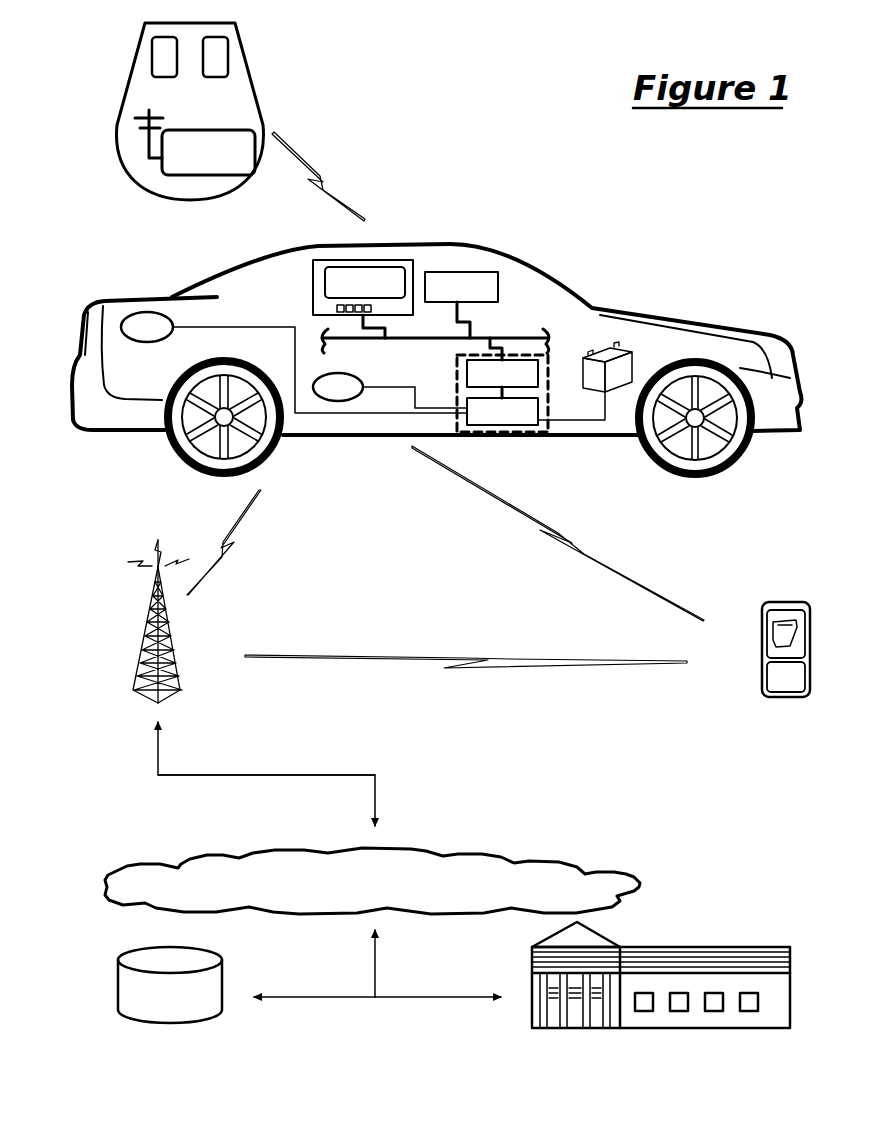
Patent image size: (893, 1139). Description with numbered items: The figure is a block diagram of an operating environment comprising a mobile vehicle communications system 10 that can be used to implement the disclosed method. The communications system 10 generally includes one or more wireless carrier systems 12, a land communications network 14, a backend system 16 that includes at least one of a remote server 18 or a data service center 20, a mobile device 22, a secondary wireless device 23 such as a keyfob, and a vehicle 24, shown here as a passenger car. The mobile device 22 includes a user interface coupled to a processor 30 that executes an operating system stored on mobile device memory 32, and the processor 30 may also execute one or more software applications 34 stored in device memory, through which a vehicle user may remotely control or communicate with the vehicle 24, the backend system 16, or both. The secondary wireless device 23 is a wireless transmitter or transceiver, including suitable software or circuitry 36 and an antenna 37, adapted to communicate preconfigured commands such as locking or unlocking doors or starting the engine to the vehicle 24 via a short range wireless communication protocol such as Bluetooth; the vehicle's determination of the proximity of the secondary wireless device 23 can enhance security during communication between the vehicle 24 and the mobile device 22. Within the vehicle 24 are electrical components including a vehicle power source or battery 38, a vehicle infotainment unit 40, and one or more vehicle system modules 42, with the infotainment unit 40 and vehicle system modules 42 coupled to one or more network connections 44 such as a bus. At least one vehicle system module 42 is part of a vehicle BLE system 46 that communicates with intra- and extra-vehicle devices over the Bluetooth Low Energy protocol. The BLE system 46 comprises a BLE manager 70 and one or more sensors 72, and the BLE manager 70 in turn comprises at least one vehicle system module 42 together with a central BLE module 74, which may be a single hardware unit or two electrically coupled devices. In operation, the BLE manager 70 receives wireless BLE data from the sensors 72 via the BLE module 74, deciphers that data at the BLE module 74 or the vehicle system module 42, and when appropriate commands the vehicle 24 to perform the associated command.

The mobile vehicle communications system 10 is at (436, 317).
The wireless carrier system 12 is at (147, 633).
The land communications network 14 is at (372, 881).
The backend system 16 is at (500, 1022).
The remote server 18 is at (157, 960).
The data service center 20 is at (532, 968).
The mobile device 22 is at (762, 644).
The secondary wireless device 23 is at (215, 111).
The vehicle 24 is at (599, 302).
The processor 30 is at (767, 680).
The mobile device memory 32 is at (767, 641).
The software application 34 is at (783, 630).
The circuitry 36 is at (205, 130).
The antenna 37 is at (148, 134).
The battery 38 is at (614, 345).
The vehicle infotainment unit 40 is at (363, 299).
The vehicle system module 42 is at (481, 329).
The network connection 44 is at (516, 333).
The vehicle BLE system 46 is at (446, 364).
The BLE manager 70 is at (457, 376).
The sensor 72 is at (242, 356).
The central BLE module 74 is at (536, 406).